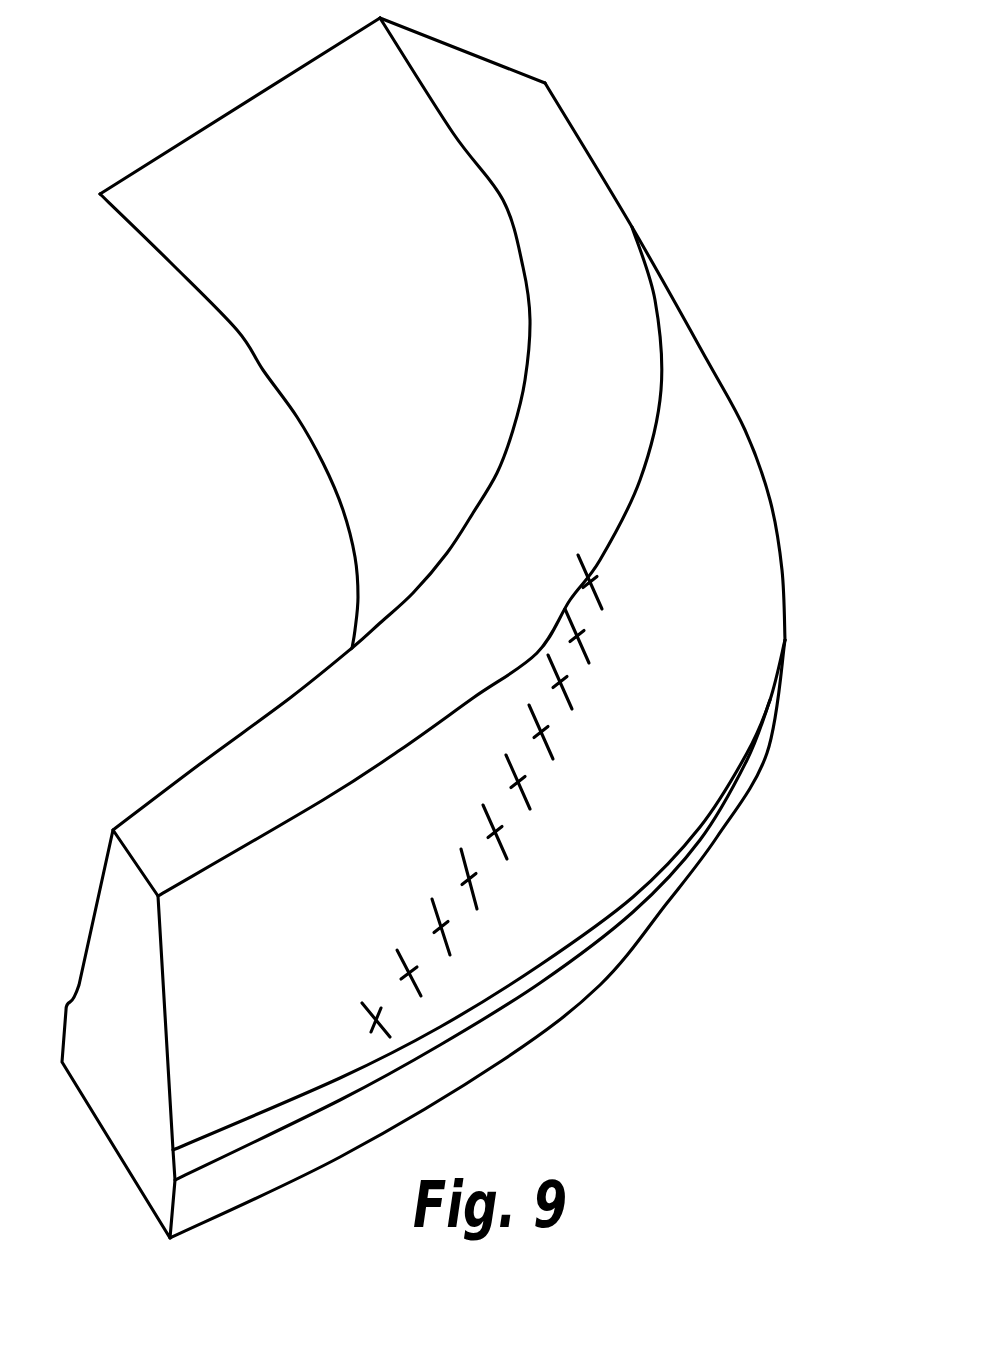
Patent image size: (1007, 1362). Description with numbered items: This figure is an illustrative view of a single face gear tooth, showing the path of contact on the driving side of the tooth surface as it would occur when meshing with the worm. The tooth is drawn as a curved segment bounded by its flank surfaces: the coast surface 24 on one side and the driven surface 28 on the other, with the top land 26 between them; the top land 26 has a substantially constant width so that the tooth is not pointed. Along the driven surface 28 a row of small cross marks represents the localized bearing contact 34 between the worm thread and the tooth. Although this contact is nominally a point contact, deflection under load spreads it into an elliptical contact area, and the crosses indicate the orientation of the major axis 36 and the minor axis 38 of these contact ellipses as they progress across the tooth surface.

The coast surface 24 is at (347, 205).
The top land 26 is at (555, 183).
The driven surface 28 is at (700, 570).
The localized bearing contact 34 is at (447, 933).
The major axis 36 is at (500, 850).
The minor axis 38 is at (535, 727).